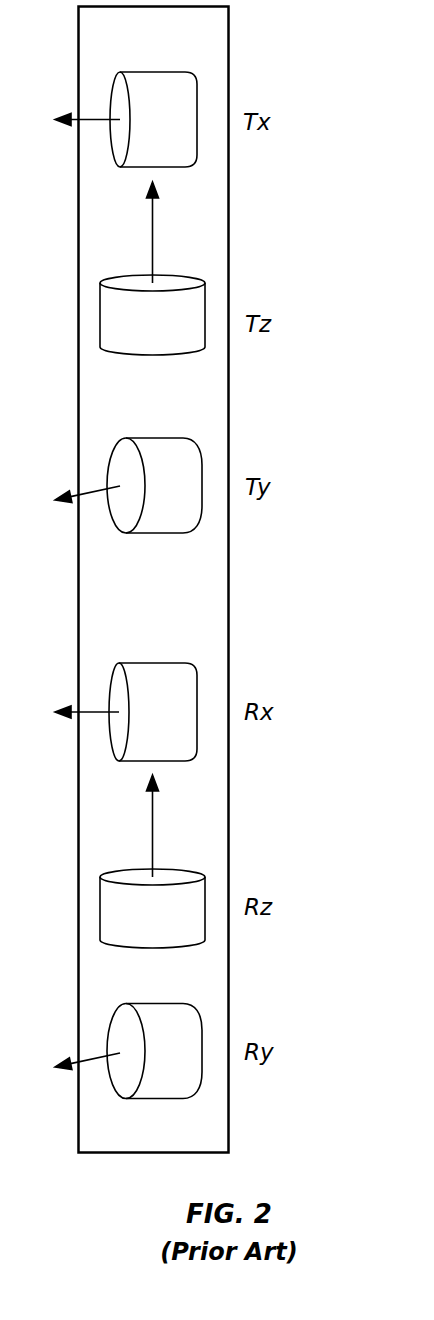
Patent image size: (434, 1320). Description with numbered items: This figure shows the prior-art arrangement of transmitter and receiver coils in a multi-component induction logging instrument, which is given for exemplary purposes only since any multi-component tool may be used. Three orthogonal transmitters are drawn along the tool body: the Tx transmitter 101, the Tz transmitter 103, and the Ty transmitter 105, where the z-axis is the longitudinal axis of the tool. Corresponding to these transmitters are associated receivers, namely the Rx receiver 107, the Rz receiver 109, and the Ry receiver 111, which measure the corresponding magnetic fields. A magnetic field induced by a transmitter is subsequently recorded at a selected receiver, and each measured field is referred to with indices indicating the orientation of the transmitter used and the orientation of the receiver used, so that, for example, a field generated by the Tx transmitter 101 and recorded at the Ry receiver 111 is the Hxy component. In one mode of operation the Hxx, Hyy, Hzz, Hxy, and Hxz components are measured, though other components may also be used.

The Tx transmitter 101 is at (272, 122).
The Tz transmitter 103 is at (272, 322).
The Ty transmitter 105 is at (272, 485).
The Rx receiver 107 is at (272, 712).
The Rz receiver 109 is at (272, 907).
The Ry receiver 111 is at (272, 1051).